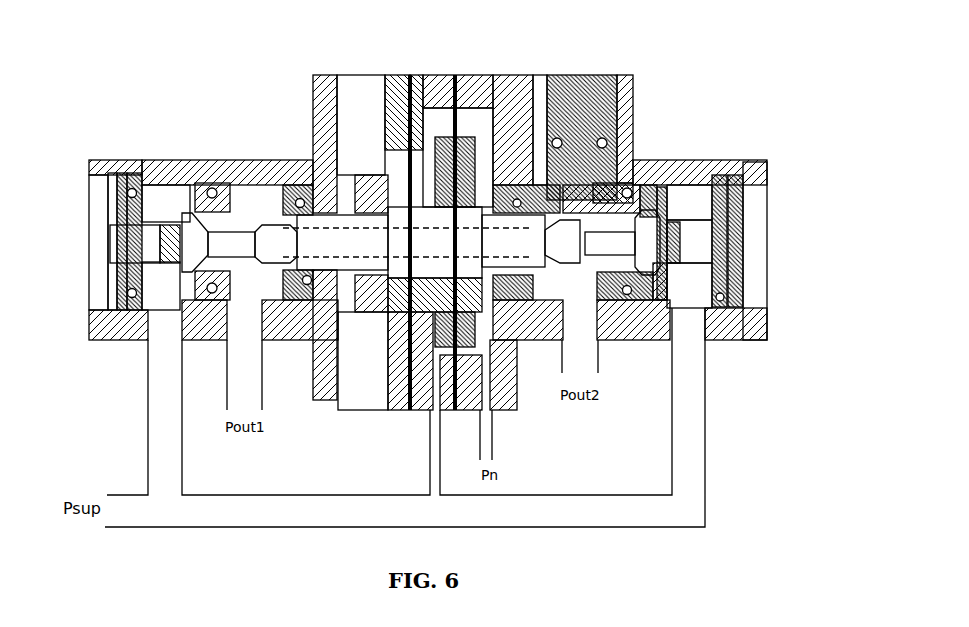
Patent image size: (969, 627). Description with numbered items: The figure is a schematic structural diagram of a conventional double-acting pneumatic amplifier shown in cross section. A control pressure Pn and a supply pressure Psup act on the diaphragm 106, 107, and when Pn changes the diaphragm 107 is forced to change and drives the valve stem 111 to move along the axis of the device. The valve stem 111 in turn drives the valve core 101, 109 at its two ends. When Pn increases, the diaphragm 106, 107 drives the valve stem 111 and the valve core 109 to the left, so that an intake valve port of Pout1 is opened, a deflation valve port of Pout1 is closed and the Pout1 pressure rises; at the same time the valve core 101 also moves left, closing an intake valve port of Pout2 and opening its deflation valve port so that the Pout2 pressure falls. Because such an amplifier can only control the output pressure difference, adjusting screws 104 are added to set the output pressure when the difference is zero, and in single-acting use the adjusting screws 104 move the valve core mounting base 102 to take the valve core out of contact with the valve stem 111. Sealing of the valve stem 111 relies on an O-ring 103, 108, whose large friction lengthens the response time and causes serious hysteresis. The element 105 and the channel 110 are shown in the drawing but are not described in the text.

The valve core 101 is at (682, 240).
The valve core mounting base 102 is at (662, 188).
The O-ring 103 is at (627, 188).
The adjusting screws 104 is at (598, 82).
The bushing 105 is at (520, 190).
The diaphragm 106 is at (455, 75).
The diaphragm 107 is at (410, 75).
The O-ring 108 is at (297, 192).
The valve core 109 is at (240, 243).
The drain channel 110 is at (362, 403).
The valve stem 111 is at (475, 280).